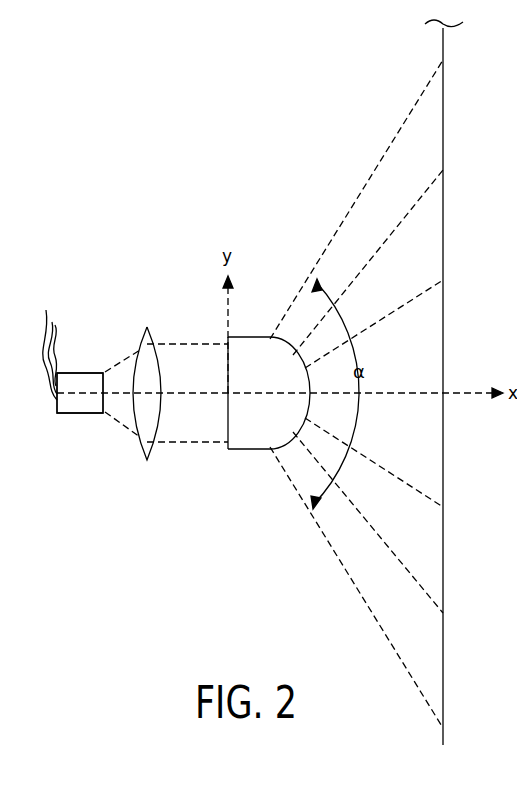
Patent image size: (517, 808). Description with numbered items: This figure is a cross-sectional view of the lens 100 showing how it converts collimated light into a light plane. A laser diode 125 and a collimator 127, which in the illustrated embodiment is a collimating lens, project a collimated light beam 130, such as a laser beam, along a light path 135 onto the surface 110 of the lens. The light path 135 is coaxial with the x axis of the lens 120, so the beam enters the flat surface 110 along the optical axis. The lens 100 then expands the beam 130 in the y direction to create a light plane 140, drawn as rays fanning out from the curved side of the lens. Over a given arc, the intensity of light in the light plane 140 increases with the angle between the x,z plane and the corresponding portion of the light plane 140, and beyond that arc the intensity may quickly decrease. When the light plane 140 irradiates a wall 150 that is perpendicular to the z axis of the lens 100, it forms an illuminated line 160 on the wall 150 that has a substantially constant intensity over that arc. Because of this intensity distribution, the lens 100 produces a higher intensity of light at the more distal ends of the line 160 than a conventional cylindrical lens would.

The lens 100 is at (246, 484).
The surface 110 is at (228, 419).
The lens 120 is at (242, 337).
The laser diode 125 is at (78, 415).
The collimator 127 is at (150, 462).
The collimated light beam 130 is at (184, 342).
The light path 135 is at (113, 390).
The light plane 140 is at (353, 203).
The wall 150 is at (443, 45).
The illuminated line 160 is at (443, 350).